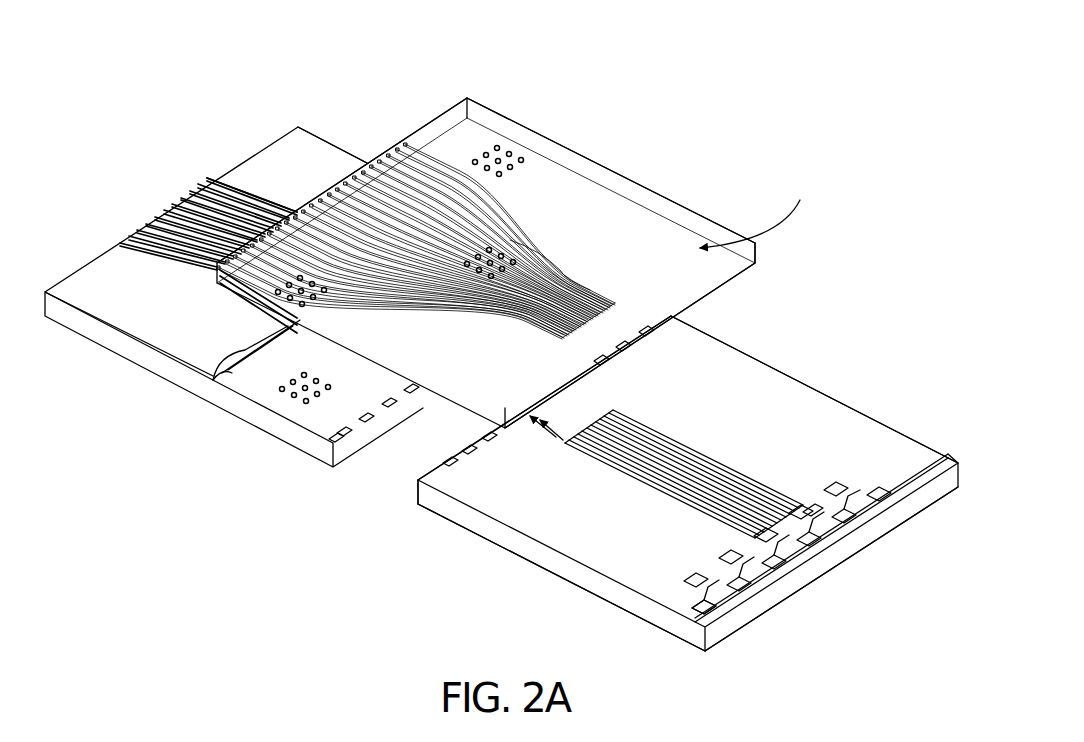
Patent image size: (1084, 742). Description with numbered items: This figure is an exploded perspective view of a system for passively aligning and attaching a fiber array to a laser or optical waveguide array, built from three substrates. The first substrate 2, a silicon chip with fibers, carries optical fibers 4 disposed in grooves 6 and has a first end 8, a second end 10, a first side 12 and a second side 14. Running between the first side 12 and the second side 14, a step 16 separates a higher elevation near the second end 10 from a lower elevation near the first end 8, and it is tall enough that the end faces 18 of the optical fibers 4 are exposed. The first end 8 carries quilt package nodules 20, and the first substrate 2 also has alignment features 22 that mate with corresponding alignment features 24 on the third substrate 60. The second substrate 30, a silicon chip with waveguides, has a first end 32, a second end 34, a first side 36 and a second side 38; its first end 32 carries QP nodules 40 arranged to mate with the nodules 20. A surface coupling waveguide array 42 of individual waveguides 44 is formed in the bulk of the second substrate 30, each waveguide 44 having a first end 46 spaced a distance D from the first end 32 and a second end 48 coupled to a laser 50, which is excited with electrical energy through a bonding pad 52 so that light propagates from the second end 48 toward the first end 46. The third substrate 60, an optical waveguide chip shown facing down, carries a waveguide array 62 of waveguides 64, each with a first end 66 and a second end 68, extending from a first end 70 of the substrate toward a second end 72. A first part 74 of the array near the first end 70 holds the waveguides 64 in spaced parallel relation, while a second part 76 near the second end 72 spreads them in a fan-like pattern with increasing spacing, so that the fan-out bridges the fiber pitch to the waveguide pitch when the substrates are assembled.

The first substrate 2 is at (310, 123).
The optical fibers 4 is at (238, 170).
The grooves 6 is at (248, 181).
The first end 8 is at (340, 455).
The second end 10 is at (93, 262).
The first side 12 is at (165, 363).
The second side 14 is at (348, 150).
The step 16 is at (222, 362).
The end faces 18 is at (262, 350).
The quilt package nodules 20 is at (415, 397).
The alignment features 22 is at (285, 398).
The alignment features 24 is at (510, 152).
The second substrate 30 is at (905, 425).
The first end 32 is at (425, 492).
The second end 34 is at (779, 600).
The first side 36 is at (670, 630).
The second side 38 is at (780, 368).
The QP nodules 40 is at (450, 468).
The surface coupling waveguide array 42 is at (680, 340).
The waveguides 44 is at (660, 425).
The first end 46 is at (612, 420).
The second end 48 is at (745, 543).
The laser 50 is at (820, 492).
The bonding pad 52 is at (725, 612).
The distance D is at (570, 410).
The third substrate 60 is at (596, 152).
The waveguide array 62 is at (650, 200).
The waveguides 64 is at (600, 292).
The first end 66 is at (620, 310).
The second end 68 is at (395, 168).
The first end 70 is at (740, 265).
The second end 72 is at (427, 117).
The first part 74 is at (560, 271).
The second part 76 is at (482, 220).